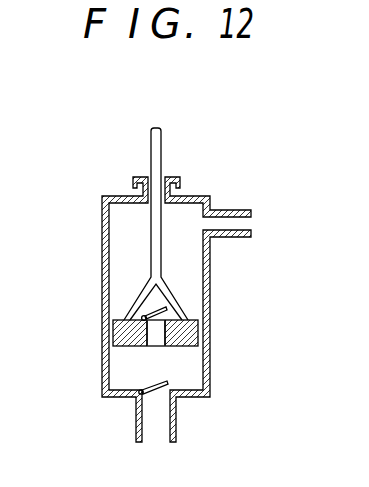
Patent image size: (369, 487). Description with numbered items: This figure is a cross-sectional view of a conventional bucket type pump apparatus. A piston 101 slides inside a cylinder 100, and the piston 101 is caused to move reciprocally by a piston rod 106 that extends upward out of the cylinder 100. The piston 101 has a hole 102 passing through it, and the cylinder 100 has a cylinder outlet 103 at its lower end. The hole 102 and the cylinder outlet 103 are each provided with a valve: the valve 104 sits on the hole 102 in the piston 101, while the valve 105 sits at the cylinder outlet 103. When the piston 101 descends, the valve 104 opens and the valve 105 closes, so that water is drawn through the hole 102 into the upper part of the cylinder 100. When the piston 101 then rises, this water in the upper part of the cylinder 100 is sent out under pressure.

The cylinder 100 is at (210, 270).
The piston 101 is at (198, 333).
The hole 102 is at (157, 346).
The cylinder outlet 103 is at (155, 393).
The valve 104 is at (152, 313).
The valve 105 is at (152, 387).
The piston rod 106 is at (161, 147).